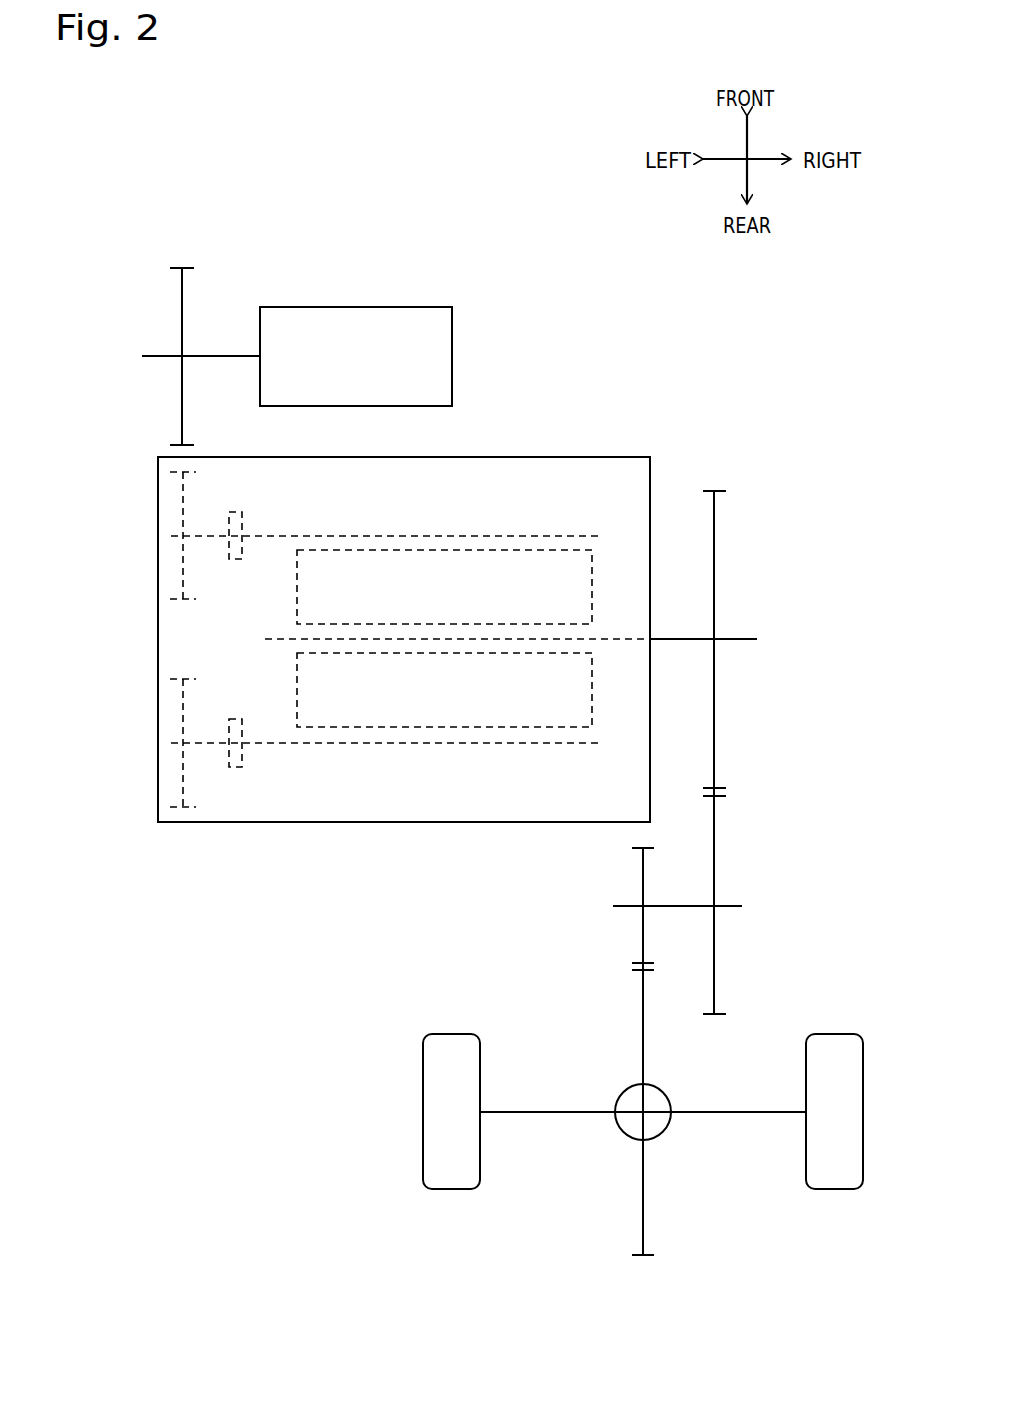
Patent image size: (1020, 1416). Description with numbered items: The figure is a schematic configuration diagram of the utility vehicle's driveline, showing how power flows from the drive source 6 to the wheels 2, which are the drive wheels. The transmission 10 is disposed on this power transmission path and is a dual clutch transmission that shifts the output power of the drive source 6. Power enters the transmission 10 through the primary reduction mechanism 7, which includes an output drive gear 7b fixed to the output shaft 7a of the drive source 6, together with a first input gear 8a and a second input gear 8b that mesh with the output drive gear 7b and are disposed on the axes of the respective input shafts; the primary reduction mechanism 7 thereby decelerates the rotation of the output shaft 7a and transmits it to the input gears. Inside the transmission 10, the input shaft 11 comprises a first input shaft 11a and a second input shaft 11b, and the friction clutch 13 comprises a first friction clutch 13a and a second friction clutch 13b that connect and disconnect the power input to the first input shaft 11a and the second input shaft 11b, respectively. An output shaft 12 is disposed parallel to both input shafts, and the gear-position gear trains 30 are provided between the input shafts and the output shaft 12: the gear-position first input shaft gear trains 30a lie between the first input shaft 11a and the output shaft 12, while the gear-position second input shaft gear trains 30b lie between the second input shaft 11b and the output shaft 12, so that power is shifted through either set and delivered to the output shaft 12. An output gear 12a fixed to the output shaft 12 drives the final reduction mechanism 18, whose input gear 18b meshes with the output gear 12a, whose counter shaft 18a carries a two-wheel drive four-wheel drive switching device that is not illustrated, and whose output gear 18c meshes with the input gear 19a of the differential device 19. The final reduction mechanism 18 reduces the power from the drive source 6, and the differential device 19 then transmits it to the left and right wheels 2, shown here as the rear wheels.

The wheels 2 is at (450, 1190).
The drive source 6 is at (374, 307).
The primary reduction mechanism 7 is at (160, 250).
The output shaft of the drive source 7a is at (152, 356).
The output drive gear 7b is at (190, 268).
The first input gear 8a is at (163, 822).
The second input gear 8b is at (172, 472).
The transmission 10 is at (704, 392).
The input shaft 11 is at (384, 653).
The first input shaft 11a is at (393, 745).
The second input shaft 11b is at (425, 535).
The output shaft 12 is at (740, 637).
The output gear 12a is at (725, 490).
The friction clutch 13 is at (276, 651).
The first friction clutch 13a is at (232, 768).
The second friction clutch 13b is at (237, 505).
The final reduction mechanism 18 is at (622, 975).
The counter shaft 18a is at (735, 905).
The input gear of the final reduction mechanism 18b is at (720, 1014).
The output gear of the final reduction mechanism 18c is at (638, 848).
The differential device 19 is at (626, 1136).
The input gear of the differential device 19a is at (650, 1256).
The gear-position gear trains 30 is at (559, 542).
The gear-position first input shaft gear trains 30a is at (593, 680).
The gear-position second input shaft gear trains 30b is at (597, 597).